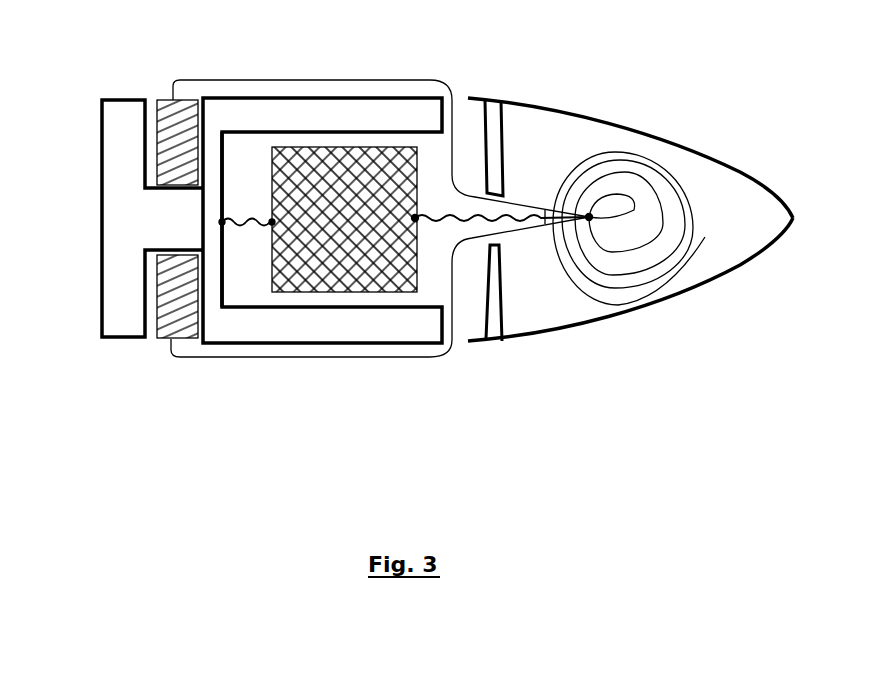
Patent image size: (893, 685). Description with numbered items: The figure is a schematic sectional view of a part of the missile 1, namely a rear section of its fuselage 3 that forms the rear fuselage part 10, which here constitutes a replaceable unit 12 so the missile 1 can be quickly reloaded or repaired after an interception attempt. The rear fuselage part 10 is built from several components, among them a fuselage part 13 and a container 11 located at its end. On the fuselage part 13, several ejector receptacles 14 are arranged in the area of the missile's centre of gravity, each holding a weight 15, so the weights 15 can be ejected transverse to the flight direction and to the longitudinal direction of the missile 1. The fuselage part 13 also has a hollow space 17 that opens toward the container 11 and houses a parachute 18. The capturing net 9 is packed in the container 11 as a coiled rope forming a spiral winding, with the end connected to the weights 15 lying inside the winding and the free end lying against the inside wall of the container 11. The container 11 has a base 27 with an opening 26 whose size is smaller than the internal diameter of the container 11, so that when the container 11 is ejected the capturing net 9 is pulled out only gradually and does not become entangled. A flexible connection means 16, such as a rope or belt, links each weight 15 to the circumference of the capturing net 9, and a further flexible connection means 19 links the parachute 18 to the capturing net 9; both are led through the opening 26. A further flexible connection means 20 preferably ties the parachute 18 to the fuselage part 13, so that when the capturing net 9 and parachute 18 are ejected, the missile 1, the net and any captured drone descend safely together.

The missile 1 is at (421, 235).
The fuselage 3 is at (421, 235).
The rear fuselage part 10 is at (421, 235).
The replaceable unit 12 is at (421, 235).
The capturing net 9 is at (651, 156).
The container 11 is at (727, 160).
The fuselage part 13 is at (321, 107).
The ejector receptacles 14 is at (160, 98).
The weights 15 is at (160, 146).
The flexible connection means 16 is at (243, 78).
The hollow space 17 is at (249, 299).
The parachute 18 is at (352, 280).
The further flexible connection means 19 is at (437, 214).
The further flexible connection means 20 is at (245, 217).
The opening 26 is at (505, 197).
The base 27 is at (495, 142).